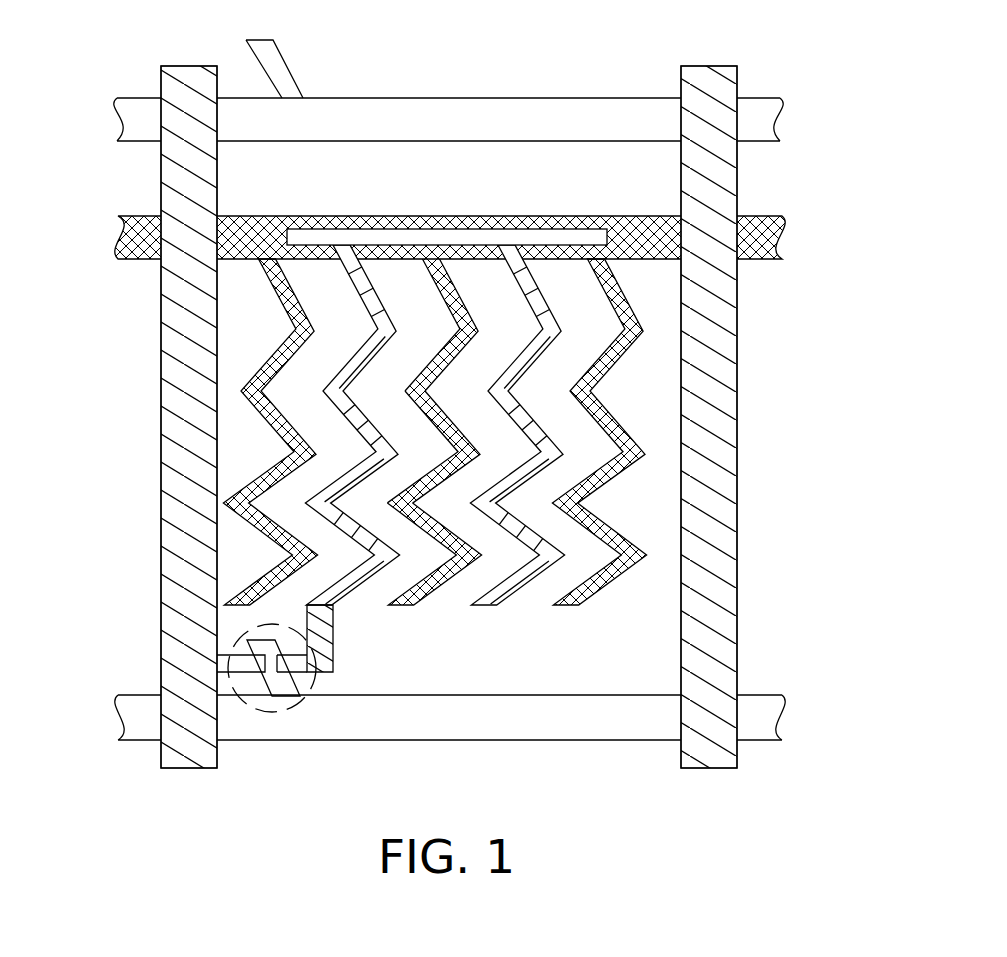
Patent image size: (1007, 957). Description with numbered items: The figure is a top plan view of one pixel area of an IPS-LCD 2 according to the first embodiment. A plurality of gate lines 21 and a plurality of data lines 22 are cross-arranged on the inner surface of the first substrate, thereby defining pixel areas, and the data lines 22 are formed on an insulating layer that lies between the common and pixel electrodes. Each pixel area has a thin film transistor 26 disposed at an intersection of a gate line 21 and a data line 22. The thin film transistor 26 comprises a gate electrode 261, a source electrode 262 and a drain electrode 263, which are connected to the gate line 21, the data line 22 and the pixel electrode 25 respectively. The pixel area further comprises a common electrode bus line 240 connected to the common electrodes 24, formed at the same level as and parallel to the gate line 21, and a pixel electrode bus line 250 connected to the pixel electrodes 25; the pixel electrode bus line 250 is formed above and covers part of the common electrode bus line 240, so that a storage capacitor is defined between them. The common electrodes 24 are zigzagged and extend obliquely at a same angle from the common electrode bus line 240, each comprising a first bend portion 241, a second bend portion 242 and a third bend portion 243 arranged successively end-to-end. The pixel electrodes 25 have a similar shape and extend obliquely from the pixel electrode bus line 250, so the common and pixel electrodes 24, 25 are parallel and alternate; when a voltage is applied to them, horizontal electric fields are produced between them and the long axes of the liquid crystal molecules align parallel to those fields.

The IPS-LCD 2 is at (450, 439).
The gate line 21 is at (138, 718).
The data line 22 is at (177, 172).
The common electrode 24 is at (548, 432).
The common electrode bus line 240 is at (118, 218).
The first bend portion 241 is at (467, 340).
The second bend portion 242 is at (466, 475).
The third bend portion 243 is at (463, 563).
The pixel electrode 25 is at (345, 372).
The pixel electrode bus line 250 is at (390, 238).
The thin film transistor 26 is at (306, 726).
The gate electrode 261 is at (287, 719).
The source electrode 262 is at (243, 665).
The drain electrode 263 is at (300, 668).